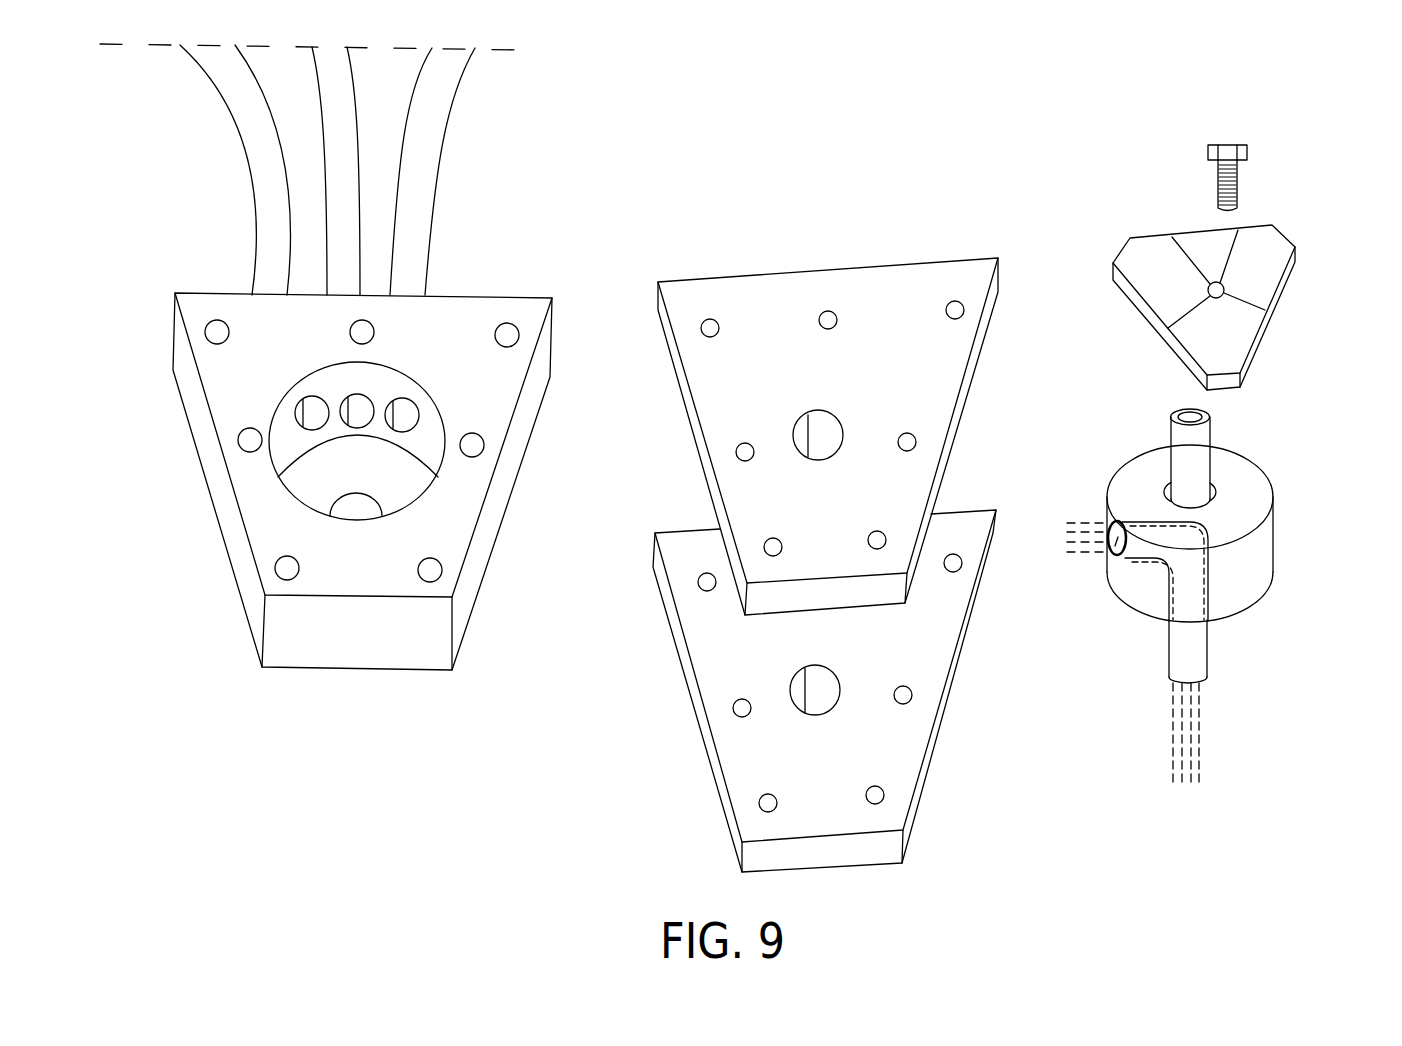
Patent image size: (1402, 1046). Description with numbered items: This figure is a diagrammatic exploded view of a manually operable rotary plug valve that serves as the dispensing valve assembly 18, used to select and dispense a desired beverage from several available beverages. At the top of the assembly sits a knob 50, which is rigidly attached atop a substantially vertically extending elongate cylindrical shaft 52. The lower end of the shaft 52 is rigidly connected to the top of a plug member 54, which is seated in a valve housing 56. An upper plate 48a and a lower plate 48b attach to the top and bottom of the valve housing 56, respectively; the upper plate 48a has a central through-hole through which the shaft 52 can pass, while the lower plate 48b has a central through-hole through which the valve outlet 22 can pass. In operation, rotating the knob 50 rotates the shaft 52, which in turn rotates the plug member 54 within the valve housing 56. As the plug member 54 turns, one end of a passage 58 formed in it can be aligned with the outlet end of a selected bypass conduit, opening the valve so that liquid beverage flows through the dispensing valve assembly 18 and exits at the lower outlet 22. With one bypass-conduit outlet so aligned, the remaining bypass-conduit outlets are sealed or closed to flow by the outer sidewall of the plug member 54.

The dispensing valve assembly 18 is at (1303, 148).
The valve outlet 22 is at (1192, 685).
The upper plate 48a is at (757, 307).
The lower plate 48b is at (750, 775).
The knob 50 is at (1255, 247).
The shaft 52 is at (1195, 450).
The plug member 54 is at (1273, 530).
The valve housing 56 is at (242, 380).
The passage 58 is at (1115, 554).